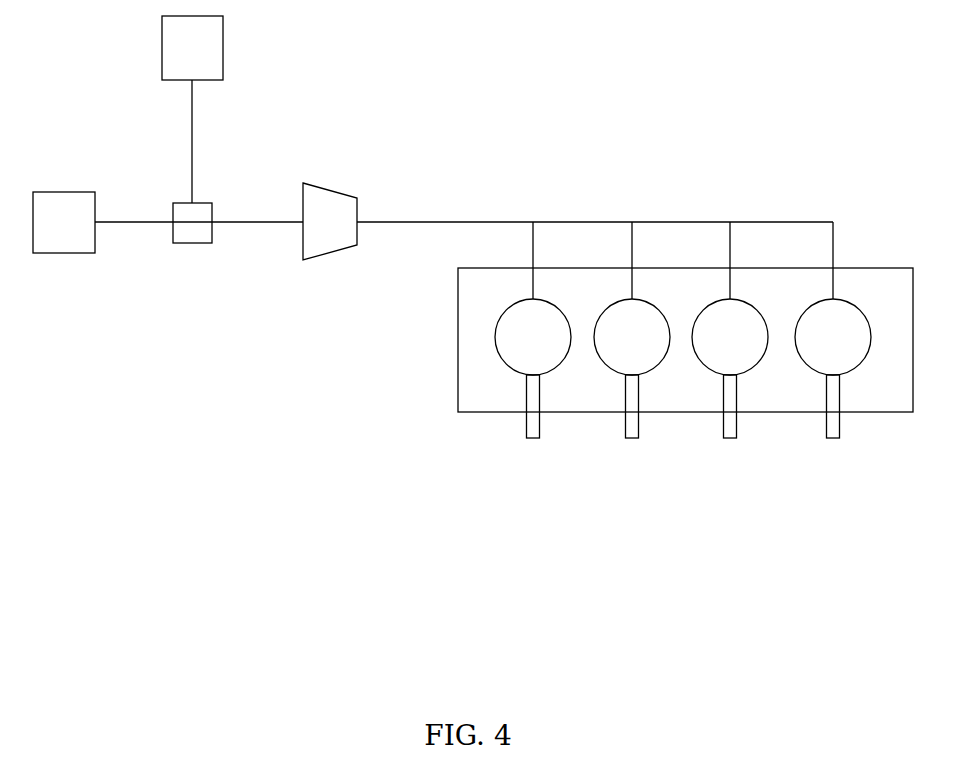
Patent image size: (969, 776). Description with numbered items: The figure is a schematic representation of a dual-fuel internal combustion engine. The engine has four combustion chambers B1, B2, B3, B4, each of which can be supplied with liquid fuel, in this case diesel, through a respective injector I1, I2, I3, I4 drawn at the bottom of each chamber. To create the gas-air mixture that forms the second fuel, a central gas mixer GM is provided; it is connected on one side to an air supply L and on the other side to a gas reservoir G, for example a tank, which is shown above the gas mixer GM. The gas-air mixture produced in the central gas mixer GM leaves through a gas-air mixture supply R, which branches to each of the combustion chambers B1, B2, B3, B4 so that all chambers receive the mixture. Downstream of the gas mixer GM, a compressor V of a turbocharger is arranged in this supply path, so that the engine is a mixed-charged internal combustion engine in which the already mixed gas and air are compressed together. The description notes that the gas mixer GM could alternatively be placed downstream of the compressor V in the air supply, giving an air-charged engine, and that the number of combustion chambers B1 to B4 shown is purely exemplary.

The gas reservoir G is at (192, 109).
The air supply L is at (103, 222).
The central gas mixer GM is at (172, 252).
The compressor V is at (331, 172).
The gas-air mixture supply R is at (592, 221).
The combustion chamber B1 is at (525, 337).
The combustion chamber B2 is at (630, 337).
The combustion chamber B3 is at (727, 337).
The combustion chamber B4 is at (833, 337).
The injector I1 is at (530, 425).
The injector I2 is at (630, 425).
The injector I3 is at (727, 425).
The injector I4 is at (831, 425).